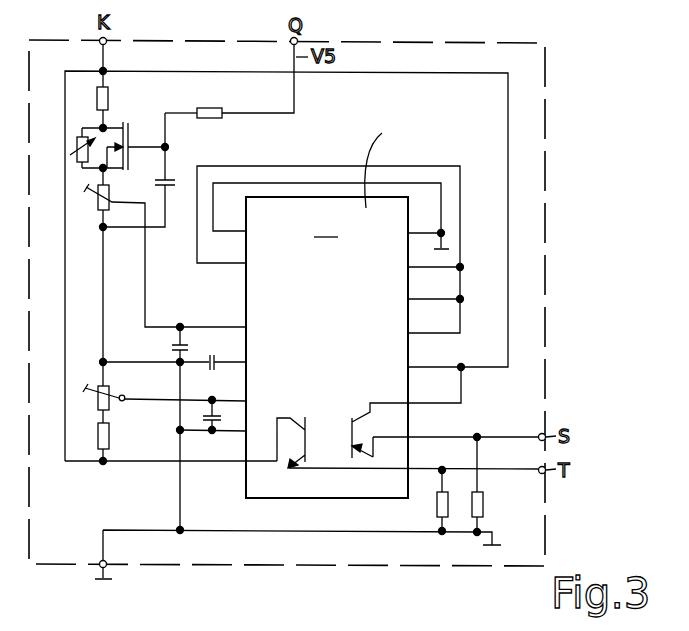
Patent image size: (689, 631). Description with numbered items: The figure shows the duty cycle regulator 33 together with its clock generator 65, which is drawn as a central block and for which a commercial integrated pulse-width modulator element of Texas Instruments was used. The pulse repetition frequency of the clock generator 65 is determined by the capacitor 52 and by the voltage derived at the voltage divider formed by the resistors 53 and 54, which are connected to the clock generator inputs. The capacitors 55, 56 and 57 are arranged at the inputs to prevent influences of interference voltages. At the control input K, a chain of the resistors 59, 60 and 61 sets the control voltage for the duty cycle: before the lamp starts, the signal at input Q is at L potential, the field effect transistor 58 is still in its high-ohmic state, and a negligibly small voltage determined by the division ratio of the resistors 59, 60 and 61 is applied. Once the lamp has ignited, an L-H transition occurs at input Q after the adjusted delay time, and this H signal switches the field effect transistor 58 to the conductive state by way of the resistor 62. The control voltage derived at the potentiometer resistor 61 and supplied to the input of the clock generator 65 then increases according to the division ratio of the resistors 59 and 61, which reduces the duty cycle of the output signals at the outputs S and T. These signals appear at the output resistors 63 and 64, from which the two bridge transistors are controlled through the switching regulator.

The duty cycle regulator 33 is at (218, 35).
The capacitor 52 is at (215, 354).
The resistor 53 is at (98, 405).
The resistor 54 is at (98, 439).
The capacitor 55 is at (170, 186).
The capacitor 56 is at (177, 342).
The capacitor 57 is at (217, 424).
The field effect transistor 58 is at (131, 153).
The resistor 59 is at (97, 100).
The resistor 60 is at (70, 155).
The potentiometer resistor 61 is at (98, 205).
The resistor 62 is at (212, 118).
The output resistor 63 is at (437, 507).
The output resistor 64 is at (483, 511).
The clock generator 65 is at (369, 309).